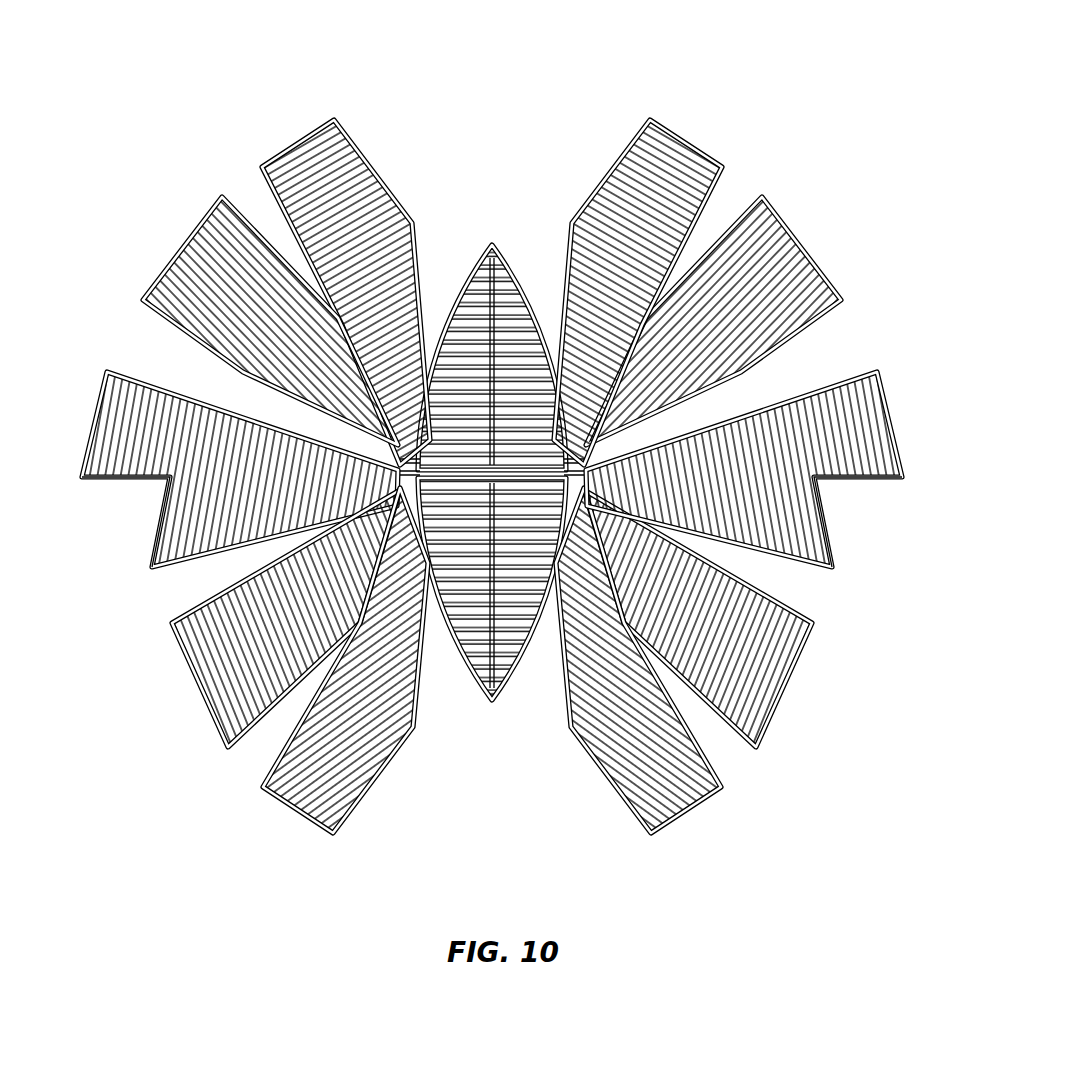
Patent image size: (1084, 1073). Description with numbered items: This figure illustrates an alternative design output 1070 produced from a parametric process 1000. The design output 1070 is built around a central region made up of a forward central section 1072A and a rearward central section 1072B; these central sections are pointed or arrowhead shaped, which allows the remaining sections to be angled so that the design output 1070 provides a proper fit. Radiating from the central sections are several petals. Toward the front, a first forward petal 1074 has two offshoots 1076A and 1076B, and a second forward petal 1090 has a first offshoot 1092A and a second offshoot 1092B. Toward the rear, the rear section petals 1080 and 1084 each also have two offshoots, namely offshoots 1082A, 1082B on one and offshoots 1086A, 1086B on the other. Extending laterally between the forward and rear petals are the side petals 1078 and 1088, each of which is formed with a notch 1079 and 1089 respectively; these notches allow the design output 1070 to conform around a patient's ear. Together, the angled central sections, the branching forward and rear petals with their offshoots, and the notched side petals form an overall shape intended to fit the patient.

The parametric process 1000 is at (780, 45).
The design output 1070 is at (546, 770).
The forward central section 1072A is at (470, 256).
The rearward central section 1072B is at (470, 690).
The first forward petal 1074 is at (374, 150).
The offshoot 1076A is at (284, 124).
The offshoot 1076B is at (172, 236).
The side petal 1078 is at (140, 366).
The notch 1079 is at (160, 486).
The rear section petal 1080 is at (440, 777).
The offshoot 1082A is at (185, 697).
The offshoot 1082B is at (290, 818).
The rear section petal 1084 is at (820, 674).
The offshoot 1086A is at (770, 727).
The offshoot 1086B is at (695, 823).
The side petal 1088 is at (862, 360).
The notch 1089 is at (824, 487).
The second forward petal 1090 is at (838, 290).
The first offshoot 1092A is at (804, 229).
The second offshoot 1092B is at (697, 132).